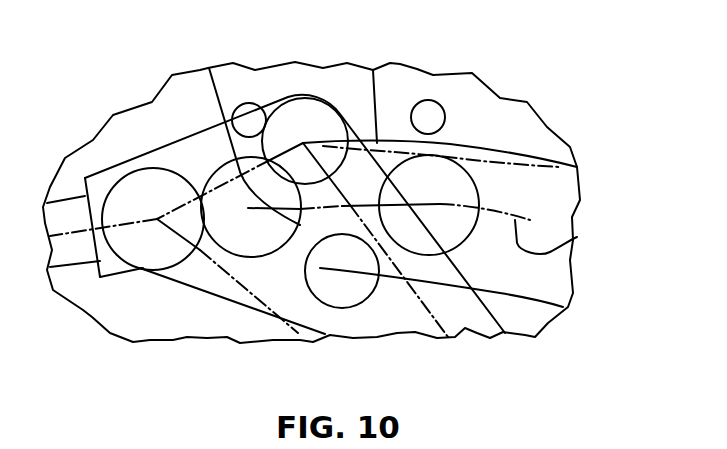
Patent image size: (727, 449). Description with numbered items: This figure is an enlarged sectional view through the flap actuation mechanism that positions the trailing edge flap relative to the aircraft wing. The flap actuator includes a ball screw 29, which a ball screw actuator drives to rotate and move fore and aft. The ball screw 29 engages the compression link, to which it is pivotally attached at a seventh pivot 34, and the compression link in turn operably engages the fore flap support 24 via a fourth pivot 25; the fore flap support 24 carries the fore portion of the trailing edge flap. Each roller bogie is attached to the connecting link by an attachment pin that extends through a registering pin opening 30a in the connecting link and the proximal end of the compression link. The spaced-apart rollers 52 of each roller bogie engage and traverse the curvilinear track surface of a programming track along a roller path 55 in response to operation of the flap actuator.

The fore flap support 24 is at (363, 92).
The fourth pivot 25 is at (308, 120).
The ball screw 29 is at (65, 217).
The registering pin opening 30a is at (343, 298).
The seventh pivot 34 is at (153, 185).
The rollers 52 is at (452, 178).
The roller path 55 is at (577, 237).